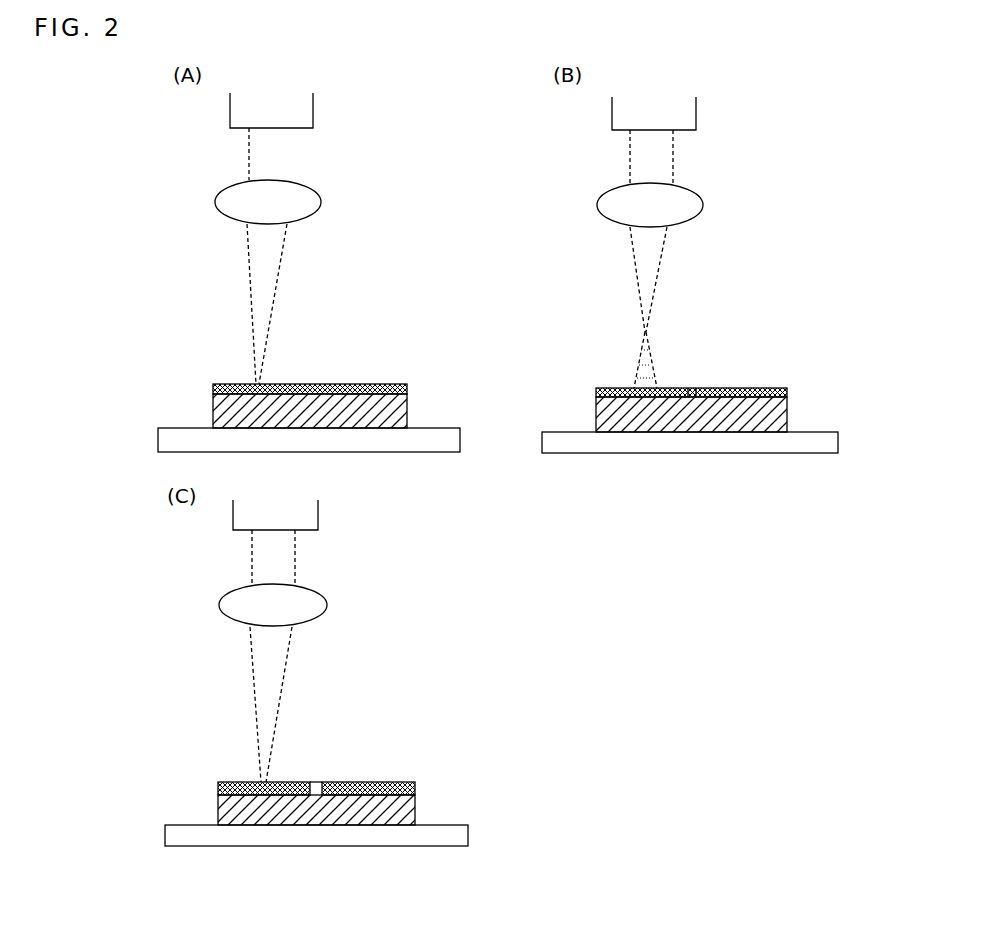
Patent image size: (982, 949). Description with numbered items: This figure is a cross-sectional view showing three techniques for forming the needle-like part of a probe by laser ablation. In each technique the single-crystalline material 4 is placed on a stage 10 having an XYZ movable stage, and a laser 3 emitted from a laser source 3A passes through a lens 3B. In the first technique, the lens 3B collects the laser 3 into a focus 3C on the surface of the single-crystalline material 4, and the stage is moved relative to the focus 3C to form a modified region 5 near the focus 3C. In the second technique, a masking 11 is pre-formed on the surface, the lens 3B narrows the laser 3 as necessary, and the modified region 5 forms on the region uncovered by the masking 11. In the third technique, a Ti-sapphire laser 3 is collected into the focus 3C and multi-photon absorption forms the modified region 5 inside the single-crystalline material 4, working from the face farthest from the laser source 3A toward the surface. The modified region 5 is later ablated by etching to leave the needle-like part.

The laser 3 is at (258, 160).
The laser source 3A is at (285, 105).
The lens 3B is at (285, 202).
The focus 3C is at (253, 382).
The single-crystalline material 4 is at (357, 370).
The modified region 5 is at (233, 382).
The stage 10 is at (415, 438).
The masking 11 is at (692, 387).